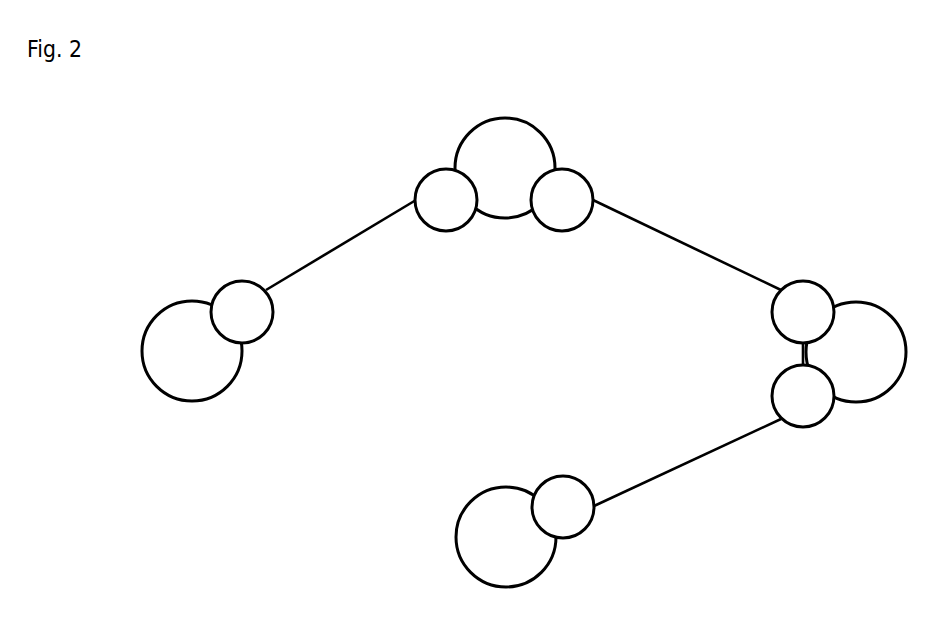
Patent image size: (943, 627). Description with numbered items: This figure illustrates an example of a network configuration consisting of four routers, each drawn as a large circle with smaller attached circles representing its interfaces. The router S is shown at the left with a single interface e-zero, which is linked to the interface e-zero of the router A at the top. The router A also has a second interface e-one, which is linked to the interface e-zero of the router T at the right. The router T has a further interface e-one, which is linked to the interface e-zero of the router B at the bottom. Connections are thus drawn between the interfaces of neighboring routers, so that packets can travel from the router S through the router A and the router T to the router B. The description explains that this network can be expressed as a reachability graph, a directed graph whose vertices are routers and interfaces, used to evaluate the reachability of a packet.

The router A is at (504, 174).
The router S is at (207, 341).
The router T is at (839, 354).
The router B is at (525, 531).